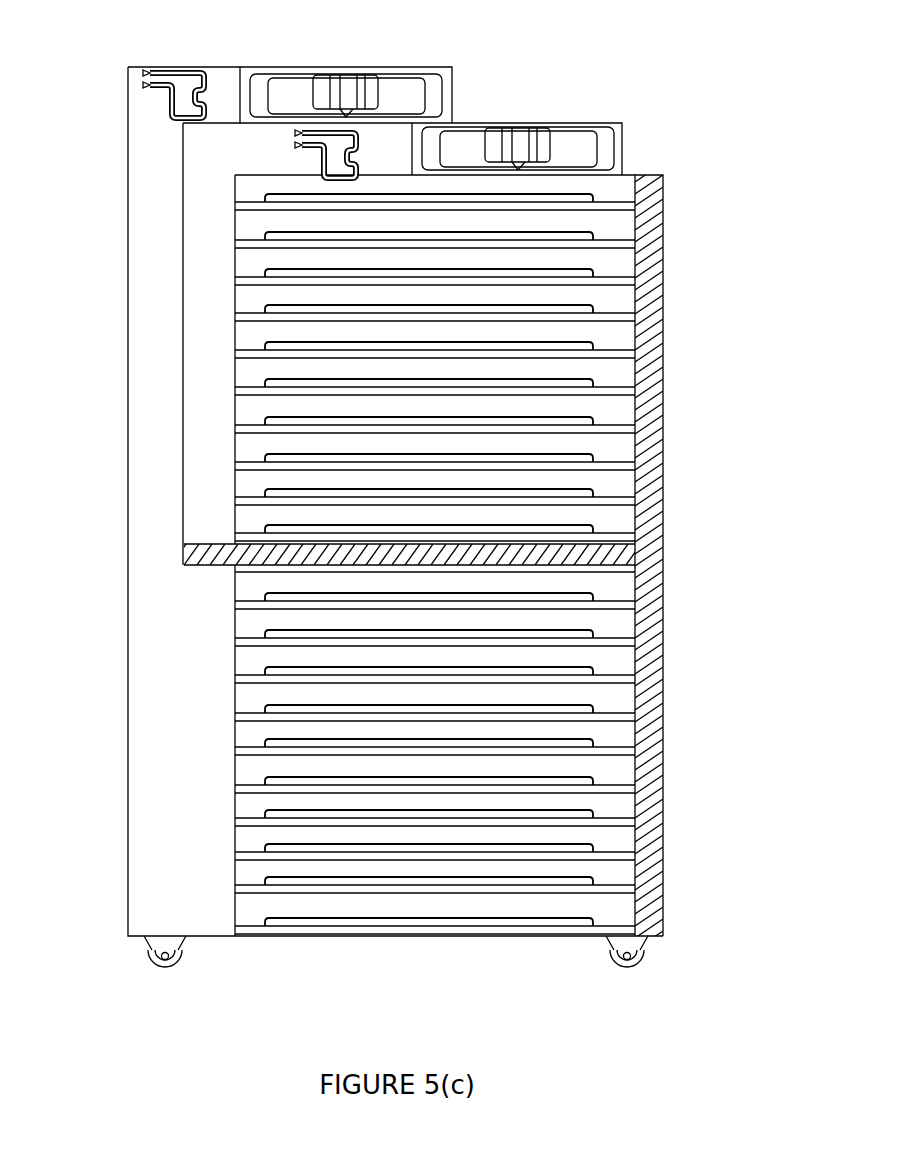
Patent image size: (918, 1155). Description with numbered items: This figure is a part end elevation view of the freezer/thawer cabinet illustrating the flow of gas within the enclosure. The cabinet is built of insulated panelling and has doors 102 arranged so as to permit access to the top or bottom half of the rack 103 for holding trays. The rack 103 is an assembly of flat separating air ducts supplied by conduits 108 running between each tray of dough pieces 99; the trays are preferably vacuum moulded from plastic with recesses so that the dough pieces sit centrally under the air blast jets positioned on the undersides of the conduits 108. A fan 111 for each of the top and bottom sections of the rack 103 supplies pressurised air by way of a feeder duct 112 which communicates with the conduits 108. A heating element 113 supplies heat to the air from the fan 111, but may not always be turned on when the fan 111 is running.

The tray of dough pieces 99 is at (267, 343).
The door 102 is at (673, 235).
The rack 103 is at (662, 490).
The conduit 108 is at (172, 613).
The fan 111 is at (570, 145).
The feeder duct 112 is at (237, 284).
The heating element 113 is at (315, 132).